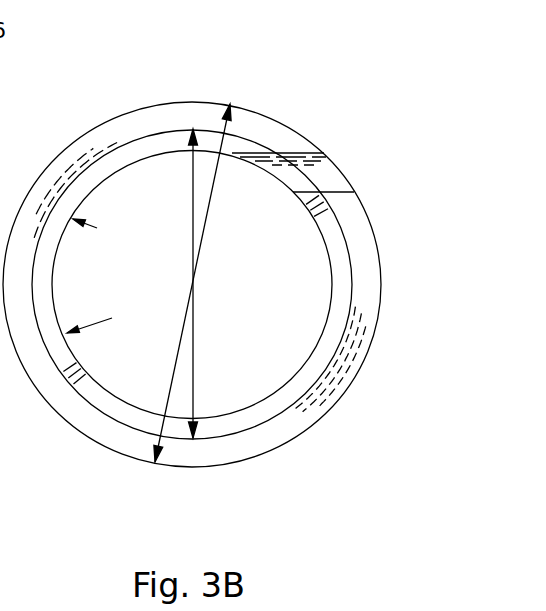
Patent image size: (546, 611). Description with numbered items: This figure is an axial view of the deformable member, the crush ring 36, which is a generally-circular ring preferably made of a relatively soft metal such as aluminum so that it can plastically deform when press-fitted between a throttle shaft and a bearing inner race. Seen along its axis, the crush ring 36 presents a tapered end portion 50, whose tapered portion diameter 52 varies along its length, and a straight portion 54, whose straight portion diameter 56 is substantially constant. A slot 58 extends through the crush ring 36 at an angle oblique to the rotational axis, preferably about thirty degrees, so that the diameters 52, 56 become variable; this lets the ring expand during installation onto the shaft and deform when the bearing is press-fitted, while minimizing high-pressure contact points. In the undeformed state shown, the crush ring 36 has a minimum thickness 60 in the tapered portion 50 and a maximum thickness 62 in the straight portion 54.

The crush ring 36 is at (205, 253).
The tapered end portion 50 is at (352, 380).
The tapered portion diameter 52 is at (193, 203).
The straight portion 54 is at (367, 289).
The straight portion diameter 56 is at (193, 394).
The slot 58 is at (310, 191).
The minimum thickness 60 is at (47, 345).
The maximum thickness 62 is at (22, 191).